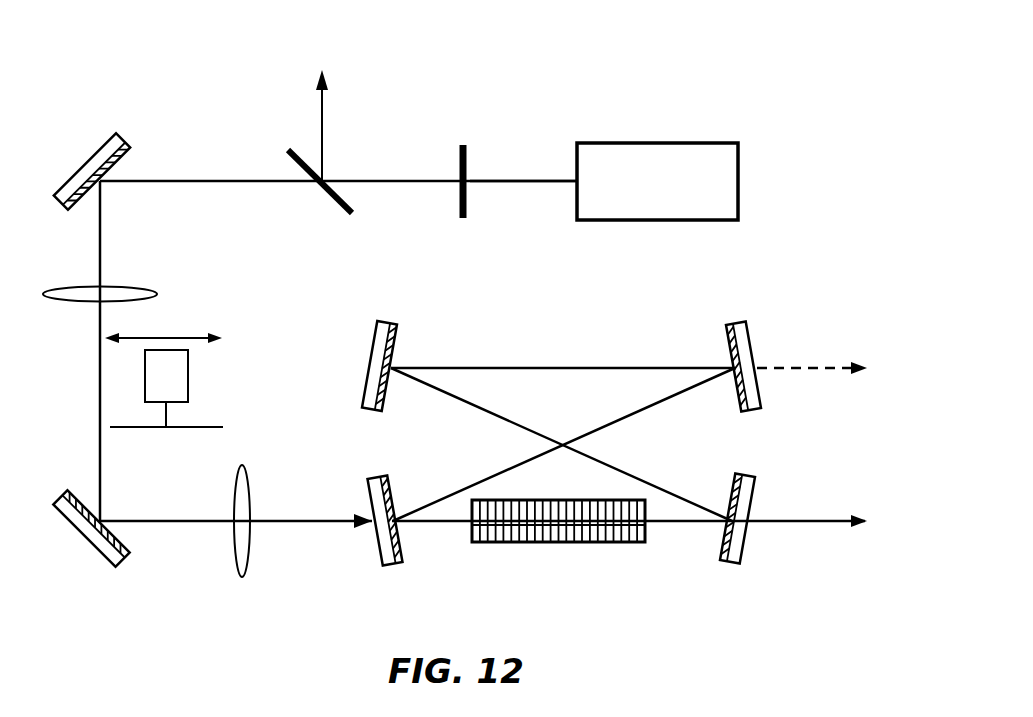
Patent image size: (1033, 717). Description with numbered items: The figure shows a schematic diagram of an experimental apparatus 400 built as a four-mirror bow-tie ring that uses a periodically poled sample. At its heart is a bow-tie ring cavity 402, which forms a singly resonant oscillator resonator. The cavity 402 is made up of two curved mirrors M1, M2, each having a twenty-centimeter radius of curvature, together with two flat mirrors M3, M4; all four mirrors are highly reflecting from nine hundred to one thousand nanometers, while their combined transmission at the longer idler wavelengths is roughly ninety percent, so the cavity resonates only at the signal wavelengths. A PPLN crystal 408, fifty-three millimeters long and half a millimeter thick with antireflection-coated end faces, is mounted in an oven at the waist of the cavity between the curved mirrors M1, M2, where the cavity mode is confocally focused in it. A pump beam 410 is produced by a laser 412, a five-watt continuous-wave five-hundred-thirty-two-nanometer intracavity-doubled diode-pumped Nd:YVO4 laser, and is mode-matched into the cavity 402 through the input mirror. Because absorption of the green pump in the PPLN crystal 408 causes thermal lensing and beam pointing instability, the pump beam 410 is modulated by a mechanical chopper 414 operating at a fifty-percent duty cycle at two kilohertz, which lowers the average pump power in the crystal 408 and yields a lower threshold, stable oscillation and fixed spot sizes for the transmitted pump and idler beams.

The apparatus 400 is at (693, 95).
The bow-tie ring cavity 402 is at (612, 320).
The PPLN crystal 408 is at (573, 542).
The pump beam 410 is at (515, 179).
The laser 412 is at (740, 187).
The mechanical chopper 414 is at (189, 373).
The curved mirror M1 is at (373, 544).
The curved mirror M2 is at (747, 538).
The flat mirror M3 is at (370, 357).
The flat mirror M4 is at (737, 320).